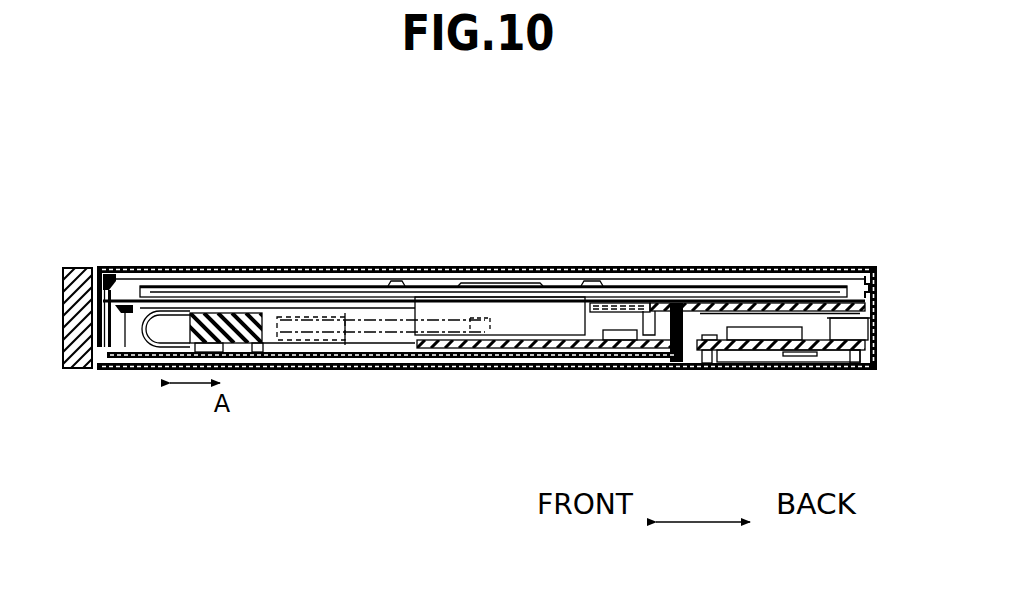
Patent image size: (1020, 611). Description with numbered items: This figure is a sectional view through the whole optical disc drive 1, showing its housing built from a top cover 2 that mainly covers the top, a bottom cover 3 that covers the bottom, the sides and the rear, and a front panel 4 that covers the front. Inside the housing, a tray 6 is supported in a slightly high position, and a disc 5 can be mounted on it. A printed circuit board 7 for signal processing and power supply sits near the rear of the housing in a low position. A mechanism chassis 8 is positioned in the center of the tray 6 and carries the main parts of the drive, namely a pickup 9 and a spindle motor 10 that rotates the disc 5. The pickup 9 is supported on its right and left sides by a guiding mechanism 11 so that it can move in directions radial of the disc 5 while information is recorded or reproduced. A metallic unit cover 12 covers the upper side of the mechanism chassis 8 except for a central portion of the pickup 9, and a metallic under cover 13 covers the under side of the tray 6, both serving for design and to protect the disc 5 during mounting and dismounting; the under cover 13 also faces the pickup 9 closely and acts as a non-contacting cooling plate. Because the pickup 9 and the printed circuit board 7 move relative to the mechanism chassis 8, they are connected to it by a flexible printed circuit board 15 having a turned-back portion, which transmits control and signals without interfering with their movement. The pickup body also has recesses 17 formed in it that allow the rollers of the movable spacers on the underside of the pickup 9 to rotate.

The optical disc drive 1 is at (462, 164).
The top cover 2 is at (582, 268).
The bottom cover 3 is at (673, 370).
The front panel 4 is at (88, 368).
The disc 5 is at (716, 292).
The tray 6 is at (804, 303).
The printed circuit board 7 is at (763, 343).
The mechanism chassis 8 is at (118, 308).
The pickup 9 is at (277, 333).
The spindle motor 10 is at (525, 318).
The guiding mechanism 11 is at (390, 320).
The metallic unit cover 12 is at (169, 286).
The metallic under cover 13 is at (386, 356).
The flexible printed circuit board 15 is at (140, 312).
The recesses 17 is at (212, 348).